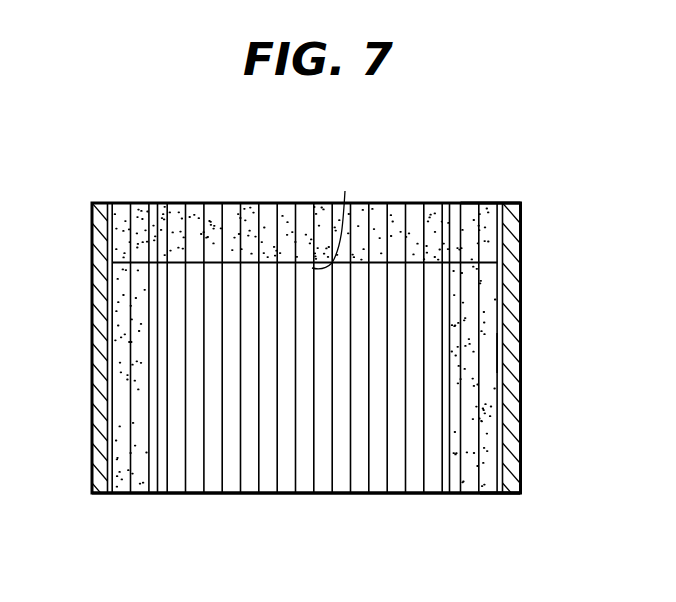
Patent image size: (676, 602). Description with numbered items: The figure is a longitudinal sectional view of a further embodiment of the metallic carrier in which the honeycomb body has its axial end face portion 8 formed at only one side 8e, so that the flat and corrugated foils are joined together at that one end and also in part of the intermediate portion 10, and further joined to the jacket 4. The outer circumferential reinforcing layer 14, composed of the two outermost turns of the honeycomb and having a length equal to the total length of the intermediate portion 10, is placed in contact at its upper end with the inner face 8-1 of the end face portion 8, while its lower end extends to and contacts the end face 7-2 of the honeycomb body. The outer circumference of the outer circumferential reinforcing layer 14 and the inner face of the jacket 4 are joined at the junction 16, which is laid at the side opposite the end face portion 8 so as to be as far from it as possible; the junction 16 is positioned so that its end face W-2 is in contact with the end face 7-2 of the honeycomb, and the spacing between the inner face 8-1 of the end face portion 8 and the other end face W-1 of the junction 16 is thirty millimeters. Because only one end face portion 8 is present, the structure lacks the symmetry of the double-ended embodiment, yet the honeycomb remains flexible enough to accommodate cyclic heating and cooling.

The jacket 4 is at (97, 280).
The junction 16 is at (101, 390).
The outer circumferential reinforcing layer 14 is at (112, 319).
The intermediate portion 10 is at (276, 341).
The end face portion 8 is at (295, 210).
The inner face of end face portion 8-1 is at (346, 217).
The one side of honeycomb with end face portion 8e is at (477, 187).
The end face of honeycomb body 7-2 is at (331, 488).
The end face of juncture W-1 is at (490, 346).
The end face of juncture W-2 is at (492, 487).